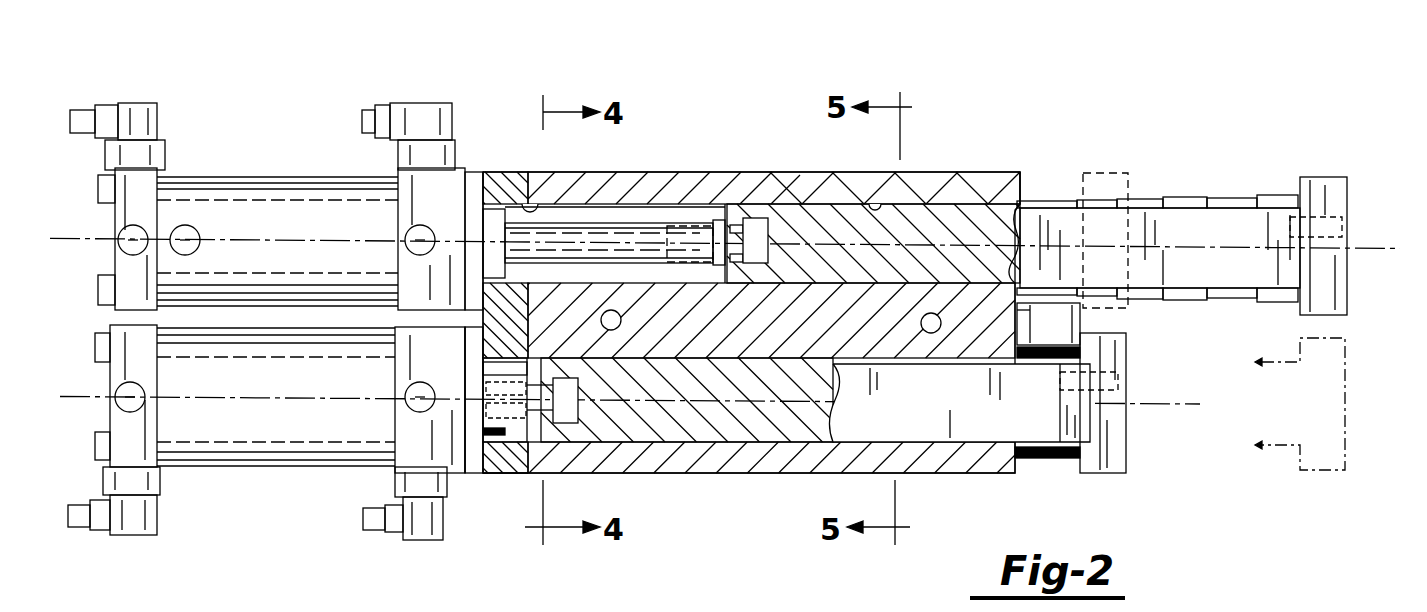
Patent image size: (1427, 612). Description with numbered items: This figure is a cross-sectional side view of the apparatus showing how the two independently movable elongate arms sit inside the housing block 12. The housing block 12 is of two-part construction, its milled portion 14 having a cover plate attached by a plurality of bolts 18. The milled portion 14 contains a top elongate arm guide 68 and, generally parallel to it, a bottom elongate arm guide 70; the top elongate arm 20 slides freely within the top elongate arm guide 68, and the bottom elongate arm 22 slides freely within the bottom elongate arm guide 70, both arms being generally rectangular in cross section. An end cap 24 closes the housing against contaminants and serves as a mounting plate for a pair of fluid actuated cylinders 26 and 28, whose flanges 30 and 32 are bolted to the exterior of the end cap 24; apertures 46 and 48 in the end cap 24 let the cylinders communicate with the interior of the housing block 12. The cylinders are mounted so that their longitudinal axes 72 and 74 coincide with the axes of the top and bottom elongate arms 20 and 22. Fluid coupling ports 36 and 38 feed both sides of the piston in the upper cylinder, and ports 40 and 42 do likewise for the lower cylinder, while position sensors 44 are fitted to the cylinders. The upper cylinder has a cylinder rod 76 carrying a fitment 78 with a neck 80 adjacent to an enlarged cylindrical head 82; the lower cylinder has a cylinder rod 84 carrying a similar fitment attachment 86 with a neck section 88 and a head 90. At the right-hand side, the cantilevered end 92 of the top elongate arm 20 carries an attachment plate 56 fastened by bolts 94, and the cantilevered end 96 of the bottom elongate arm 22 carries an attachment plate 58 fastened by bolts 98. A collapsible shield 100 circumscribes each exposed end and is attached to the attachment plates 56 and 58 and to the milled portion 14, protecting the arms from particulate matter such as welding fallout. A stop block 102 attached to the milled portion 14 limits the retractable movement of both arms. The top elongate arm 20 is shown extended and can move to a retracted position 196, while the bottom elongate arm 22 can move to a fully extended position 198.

The housing block 12 is at (690, 172).
The milled portion 14 is at (838, 172).
The bolts 18 is at (990, 192).
The top elongate arm 20 is at (1232, 248).
The bottom elongate arm 22 is at (965, 436).
The end cap 24 is at (505, 172).
The fluid actuated cylinder 26 is at (192, 177).
The fluid actuated cylinder 28 is at (258, 467).
The flange 30 is at (472, 172).
The flange 32 is at (470, 473).
The fluid coupling port 36 is at (118, 237).
The fluid coupling port 38 is at (408, 237).
The fluid coupling port 40 is at (112, 400).
The fluid coupling port 42 is at (410, 400).
The position sensors 44 is at (128, 103).
The aperture 46 is at (530, 206).
The aperture 48 is at (517, 473).
The attachment plate 56 is at (1320, 177).
The attachment plate 58 is at (1105, 473).
The top elongate arm guide 68 is at (873, 204).
The bottom elongate arm guide 70 is at (735, 465).
The longitudinal axis 72 is at (300, 240).
The longitudinal axis 74 is at (295, 397).
The cylinder rod 76 is at (645, 256).
The fitment 78 is at (700, 218).
The neck 80 is at (738, 225).
The enlarged head 82 is at (765, 218).
The cylinder rod 84 is at (505, 385).
The fitment attachment 86 is at (485, 415).
The neck section 88 is at (548, 440).
The head 90 is at (575, 420).
The cantilevered end 92 is at (1232, 198).
The bolts 94 is at (1342, 222).
The cantilevered end 96 is at (1030, 458).
The bolts 98 is at (1120, 380).
The collapsible shield 100 is at (1188, 197).
The stop block 102 is at (1047, 323).
The retracted position 196 is at (1105, 173).
The fully extended position 198 is at (1345, 450).